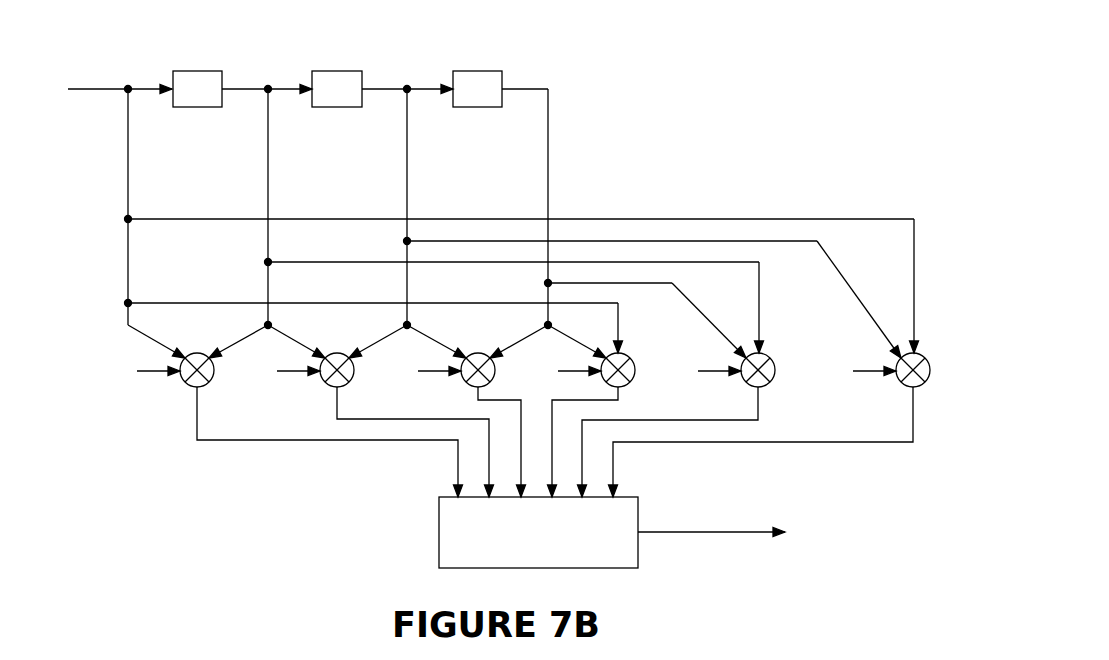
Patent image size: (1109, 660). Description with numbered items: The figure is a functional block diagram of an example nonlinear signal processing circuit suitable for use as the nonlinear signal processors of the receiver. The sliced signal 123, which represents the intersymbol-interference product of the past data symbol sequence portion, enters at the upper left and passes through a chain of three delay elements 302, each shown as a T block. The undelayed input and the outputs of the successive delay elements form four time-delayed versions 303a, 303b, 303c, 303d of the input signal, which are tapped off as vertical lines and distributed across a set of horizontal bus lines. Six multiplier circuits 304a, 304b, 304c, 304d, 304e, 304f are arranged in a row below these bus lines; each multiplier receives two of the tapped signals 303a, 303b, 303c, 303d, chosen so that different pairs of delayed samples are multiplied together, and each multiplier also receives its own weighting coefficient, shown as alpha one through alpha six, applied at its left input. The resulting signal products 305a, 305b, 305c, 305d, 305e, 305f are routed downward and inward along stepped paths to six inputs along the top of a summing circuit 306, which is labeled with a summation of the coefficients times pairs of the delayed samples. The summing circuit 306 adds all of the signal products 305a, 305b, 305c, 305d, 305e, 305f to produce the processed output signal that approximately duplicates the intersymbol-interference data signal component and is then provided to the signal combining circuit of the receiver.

The sliced signal 123 is at (90, 87).
The delay element 302 is at (202, 70).
The time-delayed version of the input signal 303a is at (130, 168).
The time-delayed version of the input signal 303b is at (270, 168).
The time-delayed version of the input signal 303c is at (409, 168).
The time-delayed version of the input signal 303d is at (550, 168).
The multiplier circuit 304a is at (205, 388).
The multiplier circuit 304b is at (345, 388).
The multiplier circuit 304c is at (470, 352).
The multiplier circuit 304d is at (630, 385).
The multiplier circuit 304e is at (771, 357).
The multiplier circuit 304f is at (900, 386).
The signal product 305a is at (265, 440).
The signal product 305b is at (347, 419).
The signal product 305c is at (525, 456).
The signal product 305d is at (550, 456).
The signal product 305e is at (723, 420).
The signal product 305f is at (805, 442).
The summing circuit 306 is at (439, 535).